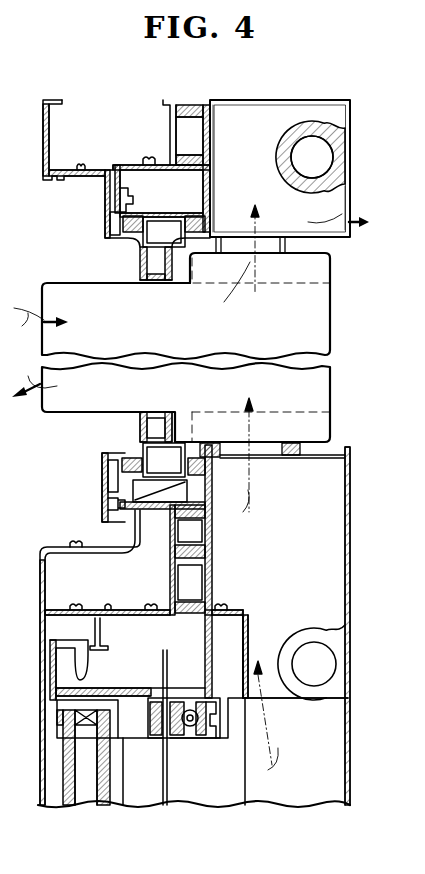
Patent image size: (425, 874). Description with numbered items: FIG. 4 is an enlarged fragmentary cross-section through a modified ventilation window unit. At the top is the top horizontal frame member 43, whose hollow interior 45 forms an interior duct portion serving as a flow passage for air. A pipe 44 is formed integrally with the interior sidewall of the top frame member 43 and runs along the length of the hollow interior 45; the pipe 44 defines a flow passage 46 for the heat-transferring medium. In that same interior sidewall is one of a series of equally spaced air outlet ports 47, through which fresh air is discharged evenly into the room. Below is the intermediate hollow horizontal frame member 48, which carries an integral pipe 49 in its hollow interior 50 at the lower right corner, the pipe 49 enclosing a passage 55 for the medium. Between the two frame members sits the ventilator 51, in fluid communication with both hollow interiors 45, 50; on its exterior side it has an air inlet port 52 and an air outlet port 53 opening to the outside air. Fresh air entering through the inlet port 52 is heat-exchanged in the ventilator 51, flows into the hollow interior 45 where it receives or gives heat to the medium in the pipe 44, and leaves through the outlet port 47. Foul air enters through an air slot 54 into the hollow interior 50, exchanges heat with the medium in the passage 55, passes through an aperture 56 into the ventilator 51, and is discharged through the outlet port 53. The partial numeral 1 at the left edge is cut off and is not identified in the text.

The top horizontal frame member 43 is at (265, 93).
The pipe 44 is at (282, 151).
The hollow interior 45 is at (228, 117).
The flow passage 46 is at (320, 158).
The air outlet port 47 is at (352, 204).
The intermediate hollow horizontal frame member 48 is at (354, 546).
The pipe 49 is at (303, 633).
The hollow interior 50 is at (325, 497).
The ventilator 51 is at (340, 308).
The air inlet port 52 is at (36, 300).
The air outlet port 53 is at (37, 395).
The air slot 54 is at (267, 700).
The passage 55 is at (322, 664).
The aperture 56 is at (265, 460).
The window frame 1 is at (5, 500).